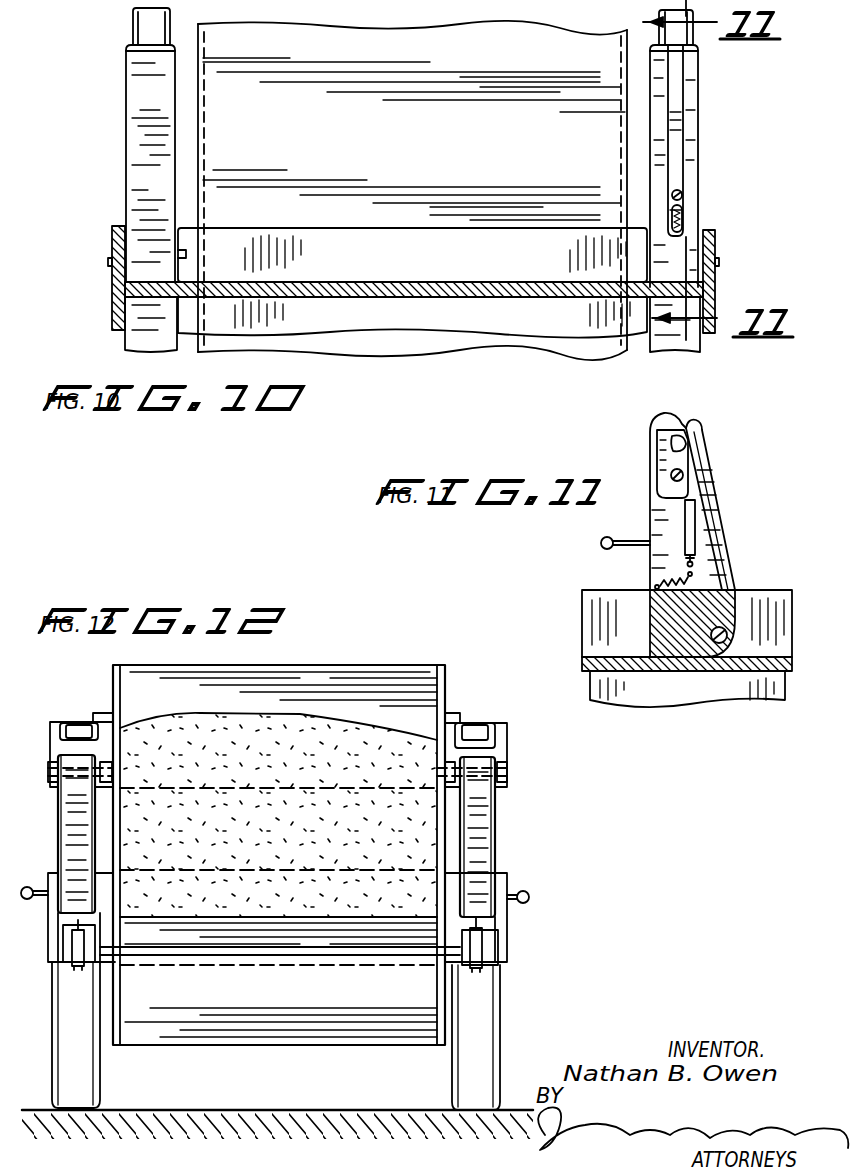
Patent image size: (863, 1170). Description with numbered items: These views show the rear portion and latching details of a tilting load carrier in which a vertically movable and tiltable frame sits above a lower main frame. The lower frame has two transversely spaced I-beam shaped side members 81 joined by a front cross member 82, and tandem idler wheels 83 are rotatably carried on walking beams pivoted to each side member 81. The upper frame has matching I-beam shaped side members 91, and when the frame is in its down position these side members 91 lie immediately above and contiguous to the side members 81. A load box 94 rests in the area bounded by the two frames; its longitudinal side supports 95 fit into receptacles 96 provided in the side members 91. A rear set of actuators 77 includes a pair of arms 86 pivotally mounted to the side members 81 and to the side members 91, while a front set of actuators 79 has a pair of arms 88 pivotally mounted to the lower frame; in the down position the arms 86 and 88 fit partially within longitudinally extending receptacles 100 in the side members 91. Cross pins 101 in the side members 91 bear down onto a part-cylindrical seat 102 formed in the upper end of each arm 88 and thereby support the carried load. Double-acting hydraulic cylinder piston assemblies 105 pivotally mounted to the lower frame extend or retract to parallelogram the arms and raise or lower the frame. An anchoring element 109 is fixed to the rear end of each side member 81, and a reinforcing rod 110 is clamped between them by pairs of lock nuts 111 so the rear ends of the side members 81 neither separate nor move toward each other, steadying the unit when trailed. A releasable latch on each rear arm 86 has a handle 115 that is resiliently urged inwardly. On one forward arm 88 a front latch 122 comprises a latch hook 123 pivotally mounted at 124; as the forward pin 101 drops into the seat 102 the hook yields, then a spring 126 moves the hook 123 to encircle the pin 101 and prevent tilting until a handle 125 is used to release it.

In FIG. 12, the rear set of actuators 77 is at (55, 826).
In FIG. 10, the front set of actuators 79 is at (120, 180).
In FIG. 11, the front set of actuators 79 is at (728, 528).
In FIG. 10, the side members 81 is at (112, 235).
In FIG. 11, the side members 81 is at (766, 592).
In FIG. 12, the side members 81 is at (48, 950).
In FIG. 10, the front cross member 82 is at (520, 228).
In FIG. 12, the tandem idler wheels 83 is at (96, 1100).
In FIG. 12, the arms 86 is at (85, 833).
In FIG. 10, the arms 88 is at (126, 140).
In FIG. 11, the arms 88 is at (650, 485).
In FIG. 12, the side members 91 is at (50, 755).
In FIG. 10, the load box 94 is at (198, 92).
In FIG. 12, the load box 94 is at (320, 667).
In FIG. 12, the longitudinal side supports 95 is at (98, 722).
In FIG. 12, the receptacles 96 is at (62, 722).
In FIG. 12, the longitudinally extending receptacles 100 is at (68, 778).
In FIG. 12, the cross pins 101 is at (110, 770).
In FIG. 11, the part-cylindrical seat 102 is at (688, 444).
In FIG. 10, the double-acting hydraulic cylinder piston assemblies 105 is at (134, 30).
In FIG. 12, the anchoring element 109 is at (78, 962).
In FIG. 12, the reinforcing rod 110 is at (330, 955).
In FIG. 12, the lock nuts 111 is at (85, 945).
In FIG. 12, the handle 115 is at (30, 884).
In FIG. 11, the front latch 122 is at (652, 448).
In FIG. 10, the latch hook 123 is at (678, 96).
In FIG. 11, the latch hook 123 is at (678, 420).
In FIG. 11, the pivot mounting 124 is at (683, 474).
In FIG. 11, the handle 125 is at (604, 540).
In FIG. 10, the spring 126 is at (683, 222).
In FIG. 11, the spring 126 is at (660, 581).